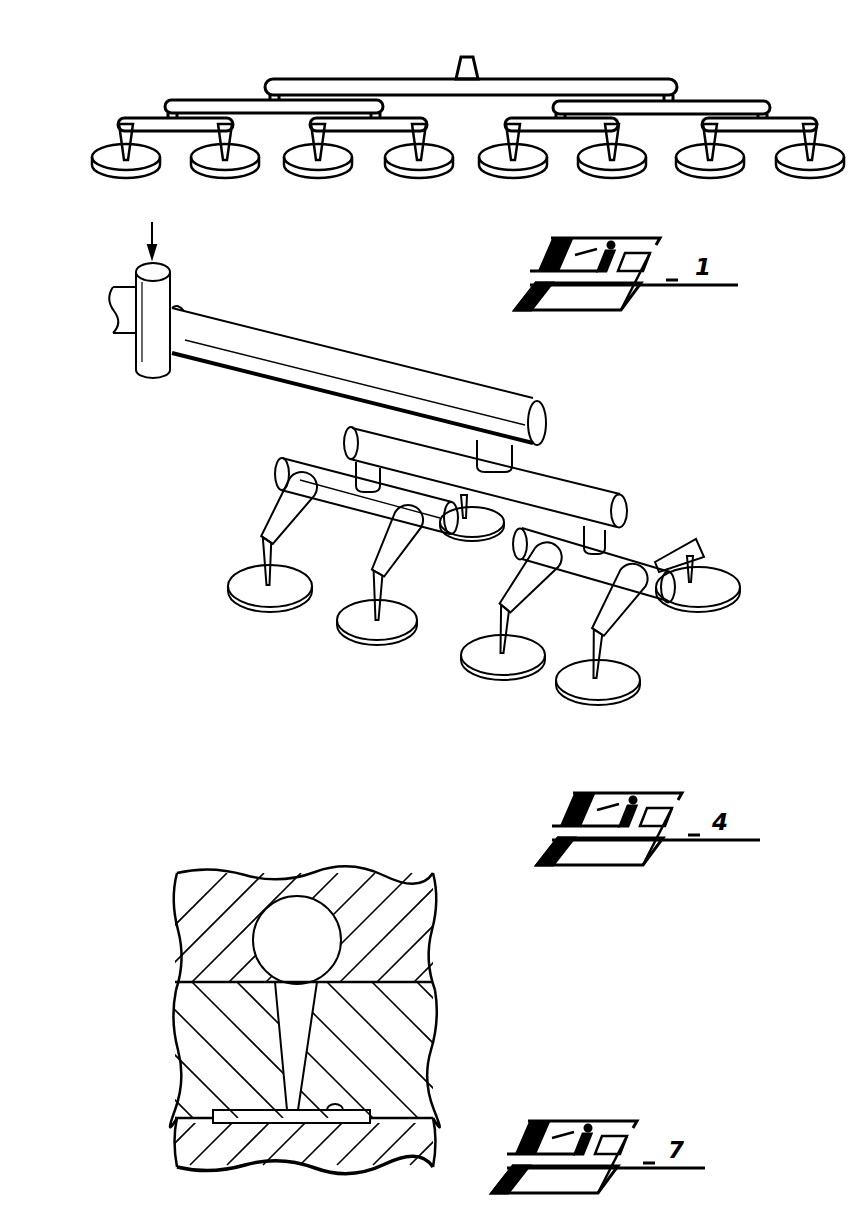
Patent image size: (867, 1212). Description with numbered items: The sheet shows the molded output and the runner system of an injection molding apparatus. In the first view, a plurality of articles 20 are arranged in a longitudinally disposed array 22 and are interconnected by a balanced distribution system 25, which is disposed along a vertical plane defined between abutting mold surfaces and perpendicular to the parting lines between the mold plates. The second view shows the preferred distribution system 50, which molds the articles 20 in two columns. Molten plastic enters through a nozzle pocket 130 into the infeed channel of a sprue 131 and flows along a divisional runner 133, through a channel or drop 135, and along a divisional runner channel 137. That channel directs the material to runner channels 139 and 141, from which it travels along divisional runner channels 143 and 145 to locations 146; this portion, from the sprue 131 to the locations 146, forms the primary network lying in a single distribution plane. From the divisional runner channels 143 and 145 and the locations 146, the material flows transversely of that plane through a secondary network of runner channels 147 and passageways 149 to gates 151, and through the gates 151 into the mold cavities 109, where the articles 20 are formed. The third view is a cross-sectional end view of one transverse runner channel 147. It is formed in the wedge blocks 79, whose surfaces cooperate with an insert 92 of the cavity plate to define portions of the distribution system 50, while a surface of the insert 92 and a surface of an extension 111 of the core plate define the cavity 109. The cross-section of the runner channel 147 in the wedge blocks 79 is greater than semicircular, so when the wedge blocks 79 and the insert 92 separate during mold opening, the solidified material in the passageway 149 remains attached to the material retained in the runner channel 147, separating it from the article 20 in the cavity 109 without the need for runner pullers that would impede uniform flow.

In FIG. 1, the article 20 is at (334, 164).
In FIG. 4, the article 20 is at (360, 627).
In FIG. 1, the longitudinally disposed array 22 is at (663, 191).
In FIG. 1, the balanced distribution system 25 is at (592, 57).
In FIG. 4, the distribution system 50 is at (575, 412).
In FIG. 7, the wedge block 79 is at (410, 885).
In FIG. 7, the insert 92 is at (415, 1007).
In FIG. 7, the cavity 109 is at (347, 1110).
In FIG. 7, the extension of the core plate 111 is at (187, 1143).
In FIG. 4, the nozzle pocket 130 is at (165, 233).
In FIG. 4, the sprue 131 is at (172, 287).
In FIG. 4, the divisional runner 133 is at (350, 365).
In FIG. 4, the drop 135 is at (498, 457).
In FIG. 4, the divisional runner channel 137 is at (590, 500).
In FIG. 4, the runner channel 139 is at (335, 455).
In FIG. 4, the runner channel 141 is at (622, 535).
In FIG. 4, the divisional runner channel 143 is at (375, 505).
In FIG. 4, the divisional runner channel 145 is at (598, 573).
In FIG. 4, the location 146 is at (285, 480).
In FIG. 4, the runner channel 147 is at (283, 510).
In FIG. 7, the runner channel 147 is at (303, 922).
In FIG. 4, the runner channel or passageway 149 is at (265, 553).
In FIG. 7, the runner channel or passageway 149 is at (292, 1035).
In FIG. 4, the gate 151 is at (637, 682).